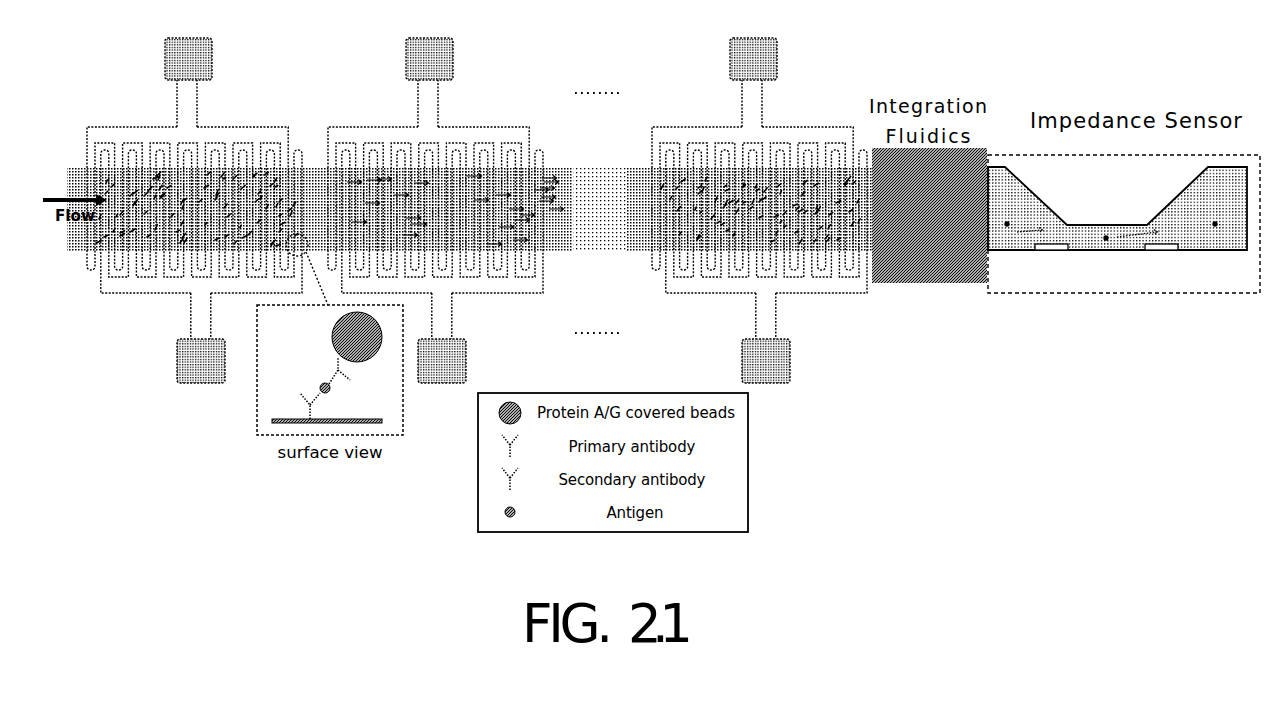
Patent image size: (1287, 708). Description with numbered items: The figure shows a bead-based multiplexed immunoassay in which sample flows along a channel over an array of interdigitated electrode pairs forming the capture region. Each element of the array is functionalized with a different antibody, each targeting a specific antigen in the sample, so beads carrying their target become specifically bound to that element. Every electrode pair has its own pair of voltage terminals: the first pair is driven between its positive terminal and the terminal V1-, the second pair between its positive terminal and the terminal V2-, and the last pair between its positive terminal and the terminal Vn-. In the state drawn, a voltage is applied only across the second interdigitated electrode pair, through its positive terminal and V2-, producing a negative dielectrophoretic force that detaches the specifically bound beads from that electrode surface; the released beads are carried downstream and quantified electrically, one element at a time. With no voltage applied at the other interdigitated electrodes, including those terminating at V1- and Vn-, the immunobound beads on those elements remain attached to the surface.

The negative terminal of first interdigitated electrode pair V1- is at (201, 338).
The negative terminal of voltage V2 V2- is at (442, 338).
The negative terminal of n-th interdigitated electrode pair Vn- is at (766, 338).